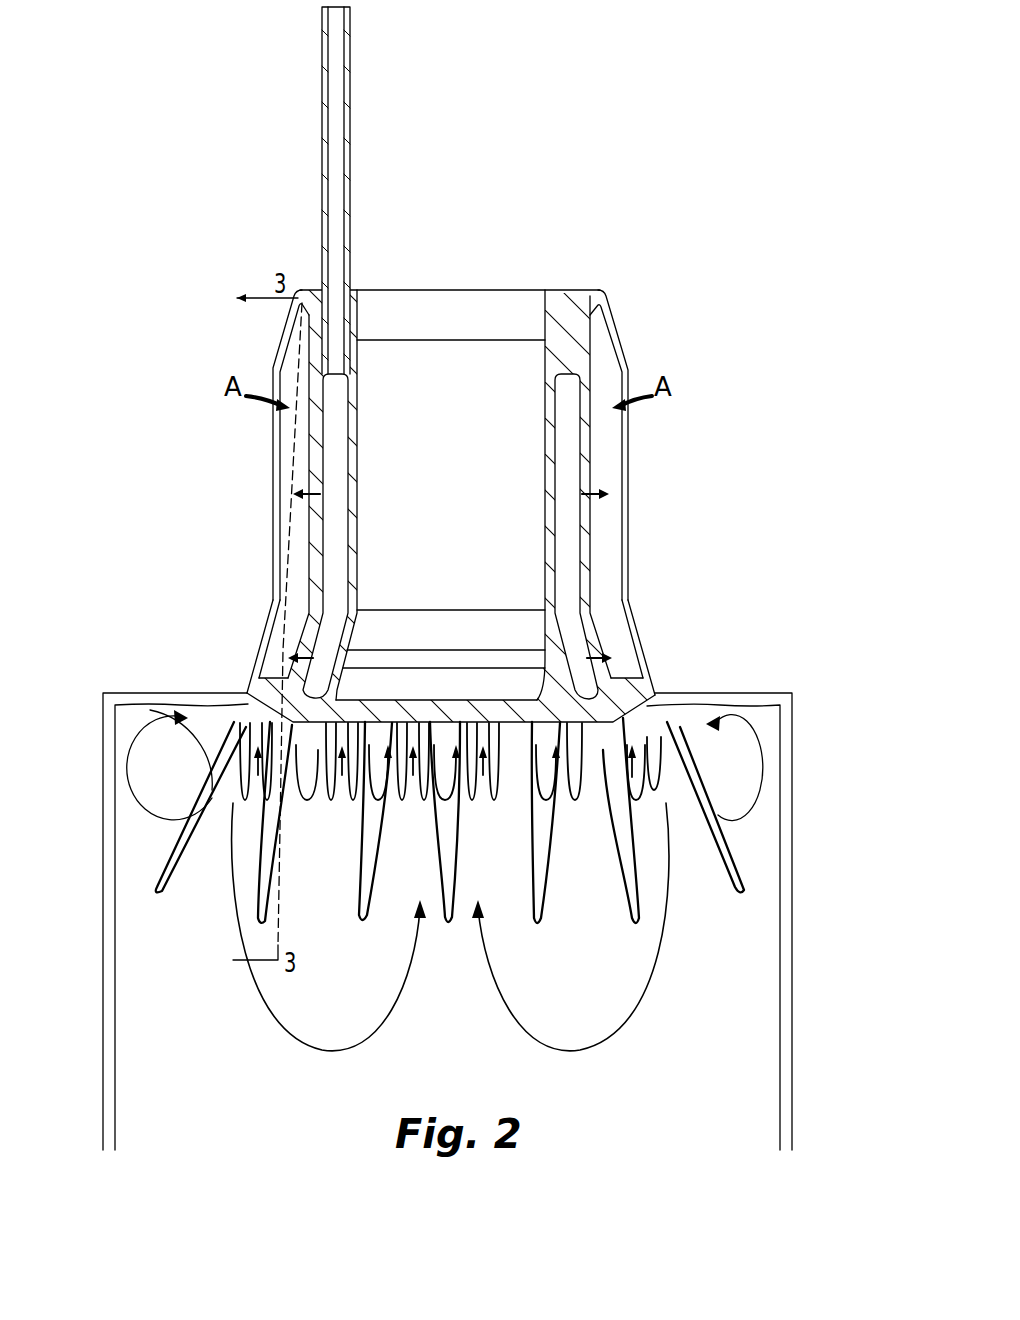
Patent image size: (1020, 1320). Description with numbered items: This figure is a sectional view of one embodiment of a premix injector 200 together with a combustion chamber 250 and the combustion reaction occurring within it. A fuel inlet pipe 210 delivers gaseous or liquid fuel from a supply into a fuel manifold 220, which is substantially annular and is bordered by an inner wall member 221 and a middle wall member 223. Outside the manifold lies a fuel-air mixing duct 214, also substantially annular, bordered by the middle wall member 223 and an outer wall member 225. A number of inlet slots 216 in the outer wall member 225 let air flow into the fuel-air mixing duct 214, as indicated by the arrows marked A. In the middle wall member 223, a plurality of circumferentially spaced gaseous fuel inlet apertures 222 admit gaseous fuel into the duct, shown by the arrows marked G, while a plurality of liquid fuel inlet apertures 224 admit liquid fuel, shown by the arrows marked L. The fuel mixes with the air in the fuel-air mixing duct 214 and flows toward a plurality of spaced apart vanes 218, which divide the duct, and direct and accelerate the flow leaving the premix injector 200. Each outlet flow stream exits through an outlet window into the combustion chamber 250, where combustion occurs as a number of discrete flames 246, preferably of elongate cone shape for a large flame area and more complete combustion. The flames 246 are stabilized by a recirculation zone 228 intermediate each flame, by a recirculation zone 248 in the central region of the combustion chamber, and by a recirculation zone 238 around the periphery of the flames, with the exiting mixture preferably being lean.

The premix injector 200 is at (665, 157).
The fuel inlet pipe 210 is at (340, 90).
The fuel-air mixing duct 214 is at (607, 542).
The inlet slots 216 is at (273, 470).
The vanes 218 is at (271, 648).
The fuel manifold 220 is at (337, 423).
The inner wall member 221 is at (352, 518).
The gaseous fuel inlet apertures 222 is at (348, 470).
The middle wall member 223 is at (318, 547).
The liquid fuel inlet apertures 224 is at (299, 680).
The outer wall member 225 is at (272, 608).
The recirculation zone 228 is at (221, 718).
The recirculation zone 238 is at (125, 791).
The flames 246 is at (152, 710).
The recirculation zone 248 is at (316, 1017).
The combustion chamber 250 is at (104, 1062).